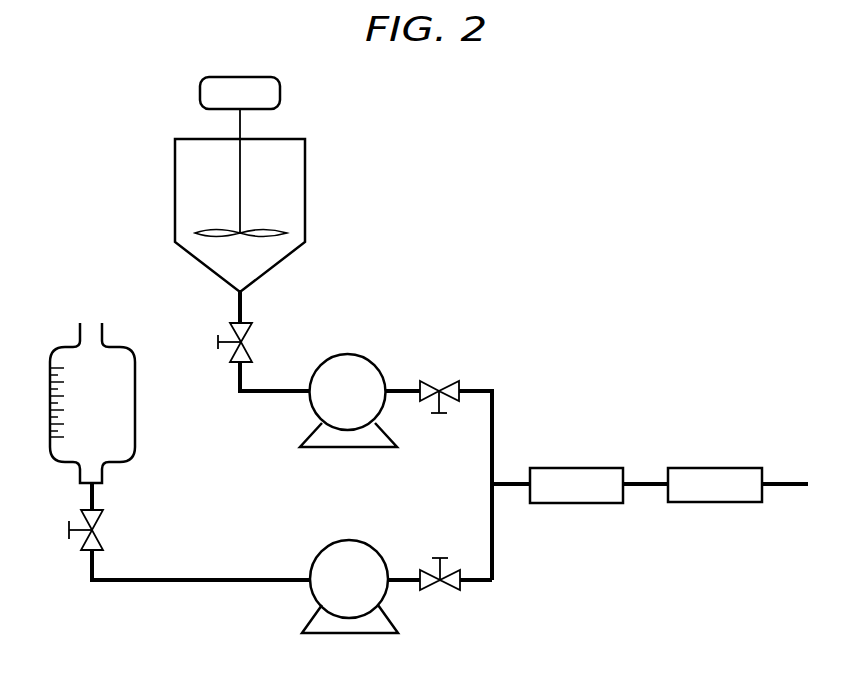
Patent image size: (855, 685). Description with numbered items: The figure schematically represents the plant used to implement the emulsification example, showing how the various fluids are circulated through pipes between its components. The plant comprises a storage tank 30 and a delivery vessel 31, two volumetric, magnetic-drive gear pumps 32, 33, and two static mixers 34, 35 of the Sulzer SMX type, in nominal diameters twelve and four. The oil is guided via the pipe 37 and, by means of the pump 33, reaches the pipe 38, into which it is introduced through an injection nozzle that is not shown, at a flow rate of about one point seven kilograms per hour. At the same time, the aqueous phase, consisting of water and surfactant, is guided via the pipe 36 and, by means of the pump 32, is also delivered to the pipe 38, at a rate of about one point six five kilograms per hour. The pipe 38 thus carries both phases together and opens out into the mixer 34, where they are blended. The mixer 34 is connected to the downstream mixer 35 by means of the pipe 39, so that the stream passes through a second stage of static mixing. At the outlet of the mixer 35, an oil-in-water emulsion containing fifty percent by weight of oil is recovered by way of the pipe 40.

The storage tank 30 is at (305, 197).
The delivery vessel 31 is at (135, 397).
The gear pump 32 is at (379, 368).
The gear pump 33 is at (369, 545).
The static mixer 34 is at (568, 468).
The static mixer 35 is at (707, 468).
The pipe 36 is at (278, 389).
The pipe 37 is at (213, 578).
The pipe 38 is at (509, 483).
The pipe 39 is at (641, 487).
The pipe 40 is at (780, 487).